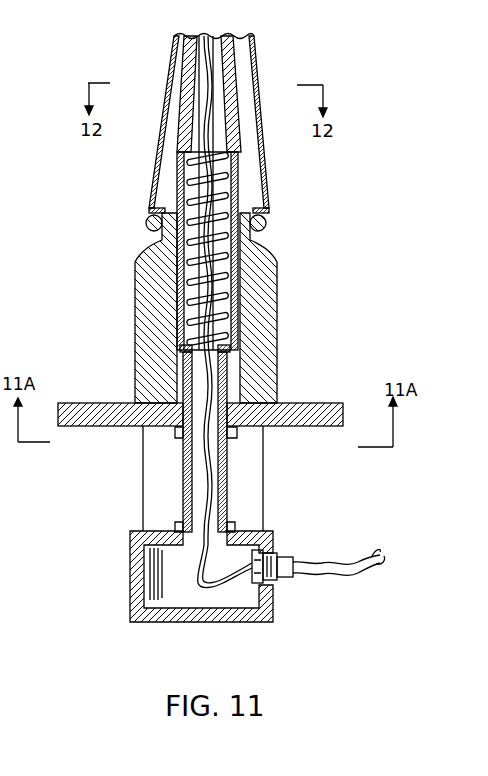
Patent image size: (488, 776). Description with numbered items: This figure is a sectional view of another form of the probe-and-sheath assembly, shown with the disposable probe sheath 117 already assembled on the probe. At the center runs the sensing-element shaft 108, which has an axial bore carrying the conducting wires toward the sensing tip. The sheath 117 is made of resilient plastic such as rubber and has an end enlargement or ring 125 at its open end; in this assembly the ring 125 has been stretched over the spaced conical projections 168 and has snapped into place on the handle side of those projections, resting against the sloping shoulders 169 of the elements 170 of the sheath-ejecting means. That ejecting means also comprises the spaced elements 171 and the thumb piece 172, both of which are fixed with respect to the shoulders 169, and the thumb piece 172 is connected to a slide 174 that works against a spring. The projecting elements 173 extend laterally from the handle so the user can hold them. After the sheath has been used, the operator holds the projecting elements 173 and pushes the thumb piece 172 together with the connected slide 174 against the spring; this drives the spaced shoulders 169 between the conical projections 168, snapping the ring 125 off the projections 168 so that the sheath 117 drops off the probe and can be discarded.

The disposable probe sheath 117 is at (252, 40).
The sensing-element shaft 108 is at (232, 72).
The conical projections 168 is at (262, 166).
The sloping shoulders 169 is at (147, 231).
The end enlargement or ring 125 is at (267, 222).
The elements of the sheath-ejecting means 170 is at (274, 284).
The projecting elements 173 is at (67, 403).
The spaced elements 171 is at (257, 447).
The slide 174 is at (223, 480).
The thumb piece 172 is at (217, 623).